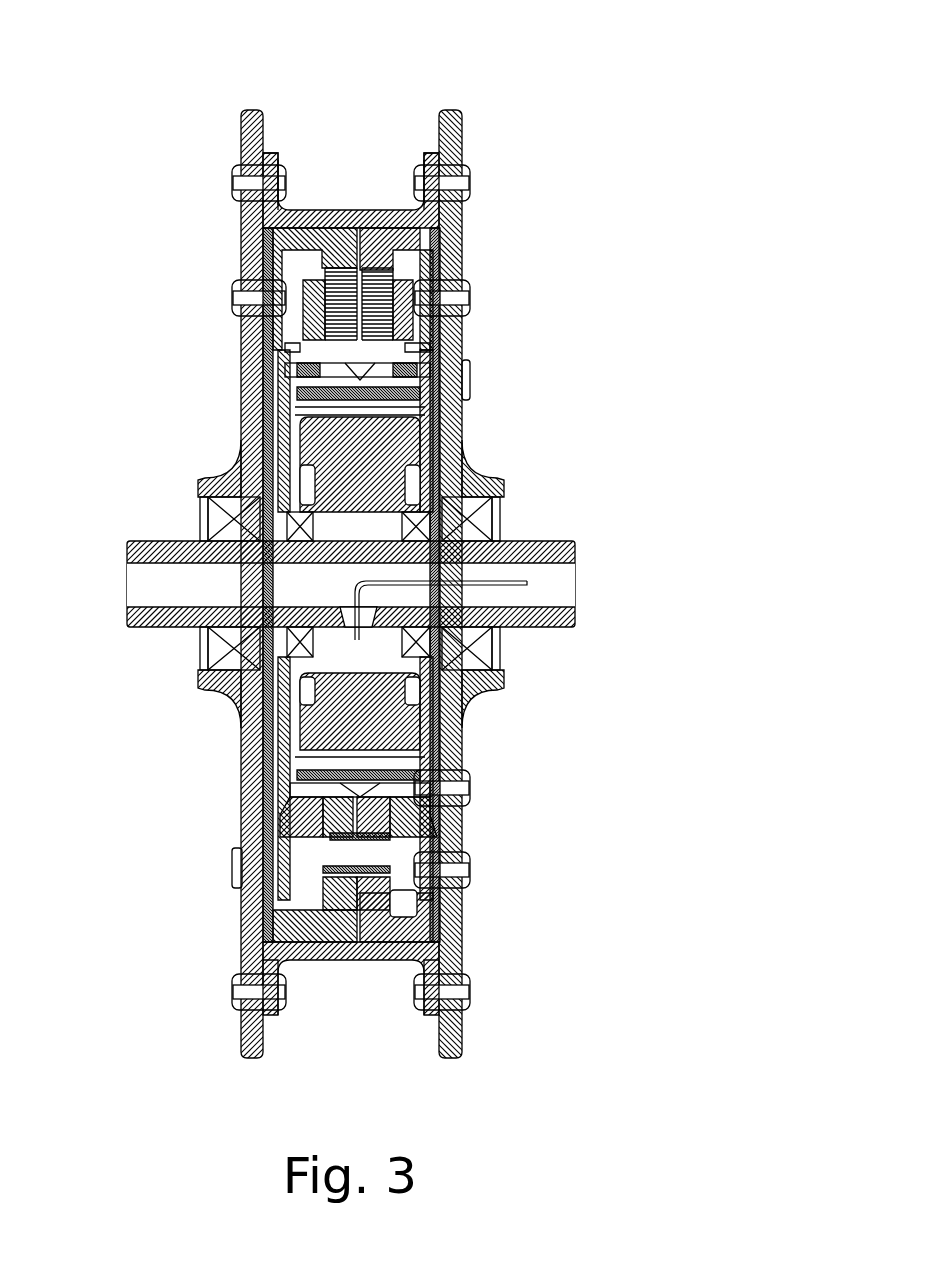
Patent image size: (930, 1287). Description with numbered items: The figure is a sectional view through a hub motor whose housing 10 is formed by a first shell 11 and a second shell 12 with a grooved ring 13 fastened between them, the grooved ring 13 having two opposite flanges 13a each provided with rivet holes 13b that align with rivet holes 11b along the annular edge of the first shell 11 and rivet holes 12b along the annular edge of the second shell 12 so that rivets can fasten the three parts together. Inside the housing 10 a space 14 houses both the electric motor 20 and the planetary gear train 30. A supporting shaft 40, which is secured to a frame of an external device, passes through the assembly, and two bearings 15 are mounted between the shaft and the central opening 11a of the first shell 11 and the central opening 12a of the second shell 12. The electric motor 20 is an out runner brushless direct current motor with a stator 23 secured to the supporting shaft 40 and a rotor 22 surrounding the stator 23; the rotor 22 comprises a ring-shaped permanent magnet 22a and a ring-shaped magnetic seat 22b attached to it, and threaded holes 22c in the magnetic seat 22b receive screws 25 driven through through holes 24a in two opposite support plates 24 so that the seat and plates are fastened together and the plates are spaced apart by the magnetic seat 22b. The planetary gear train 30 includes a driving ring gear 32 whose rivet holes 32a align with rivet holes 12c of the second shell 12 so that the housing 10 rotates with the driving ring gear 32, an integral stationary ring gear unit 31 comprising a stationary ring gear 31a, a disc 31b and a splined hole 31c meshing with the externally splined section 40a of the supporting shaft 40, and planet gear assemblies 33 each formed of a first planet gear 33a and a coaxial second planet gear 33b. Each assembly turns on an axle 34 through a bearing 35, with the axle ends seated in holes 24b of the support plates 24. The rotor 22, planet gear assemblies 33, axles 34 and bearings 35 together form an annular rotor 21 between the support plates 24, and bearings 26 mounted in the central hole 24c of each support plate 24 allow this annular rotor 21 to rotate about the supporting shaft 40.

The housing 10 is at (482, 106).
The first shell 11 is at (245, 225).
The central opening 11a is at (215, 478).
The rivet holes 11b is at (241, 140).
The second shell 12 is at (462, 205).
The central opening 12a is at (495, 480).
The rivet holes 12b is at (462, 135).
The rivet holes 12c is at (455, 300).
The grooved ring 13 is at (380, 215).
The flanges 13a is at (270, 162).
The rivet holes 13b is at (280, 165).
The space 14 is at (300, 255).
The bearings 15 is at (478, 520).
The electric motor 20 is at (432, 410).
The annular rotor 21 is at (428, 350).
The rotor 22 is at (430, 390).
The permanent magnet 22a is at (430, 400).
The magnetic seat 22b is at (420, 380).
The threaded holes 22c is at (300, 383).
The stator 23 is at (390, 440).
The support plates 24 is at (245, 710).
The through holes 24a is at (240, 760).
The holes 24b is at (245, 825).
The central hole 24c is at (245, 690).
The screws 25 is at (250, 778).
The bearings 26 is at (270, 650).
The planetary gear train 30 is at (438, 335).
The stationary ring gear unit 31 is at (240, 890).
The stationary ring gear 31a is at (245, 930).
The disc 31b is at (240, 860).
The splined hole 31c is at (275, 605).
The driving ring gear 32 is at (445, 240).
The rivet holes 32a is at (440, 275).
The planet gear assemblies 33 is at (430, 1048).
The first planet gear 33a is at (345, 945).
The second planet gear 33b is at (378, 945).
The axles 34 is at (470, 850).
The bearing 35 is at (420, 875).
The supporting shaft 40 is at (555, 552).
The externally splined section 40a is at (225, 528).